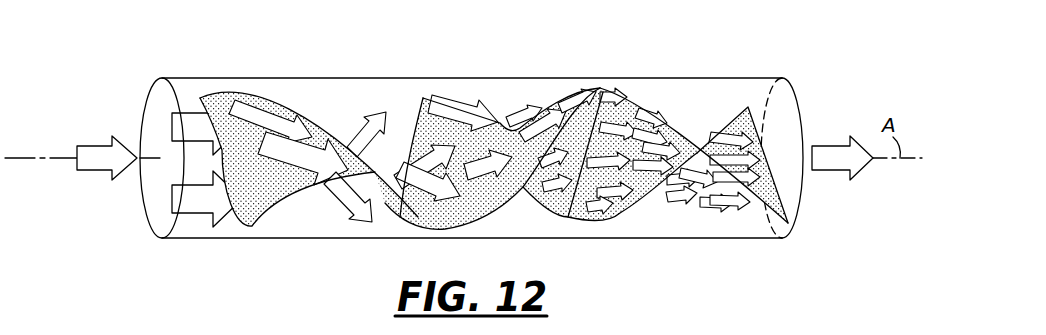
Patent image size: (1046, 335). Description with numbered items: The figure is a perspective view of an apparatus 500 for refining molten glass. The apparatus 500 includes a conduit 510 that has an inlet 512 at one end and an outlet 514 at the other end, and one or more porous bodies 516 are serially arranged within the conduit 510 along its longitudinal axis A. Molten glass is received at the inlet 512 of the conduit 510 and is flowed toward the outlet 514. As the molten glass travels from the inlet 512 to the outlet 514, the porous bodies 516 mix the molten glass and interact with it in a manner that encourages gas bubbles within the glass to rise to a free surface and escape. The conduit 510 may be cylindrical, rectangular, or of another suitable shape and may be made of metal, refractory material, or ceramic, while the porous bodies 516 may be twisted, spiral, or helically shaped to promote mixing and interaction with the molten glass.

The apparatus 500 is at (204, 44).
The conduit 510 is at (639, 78).
The inlet 512 is at (160, 103).
The outlet 514 is at (802, 207).
The porous bodies 516 is at (275, 97).